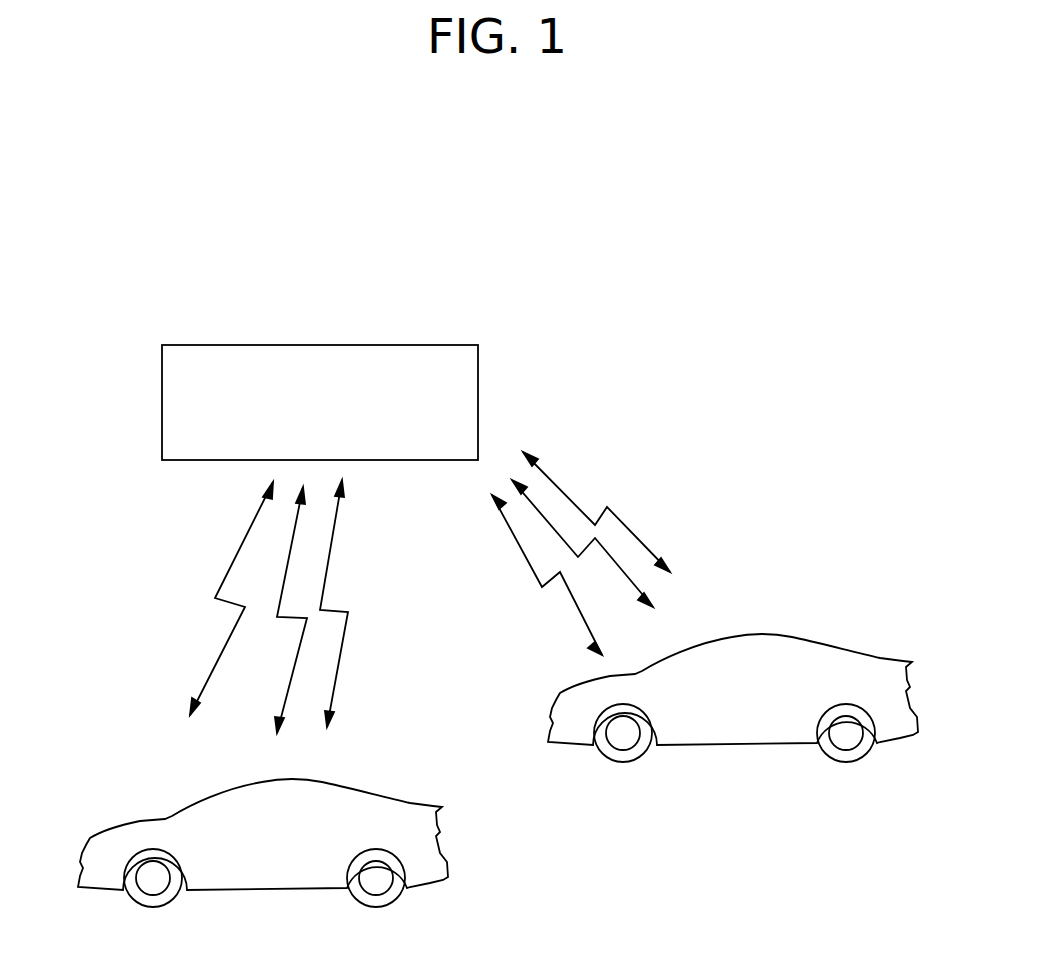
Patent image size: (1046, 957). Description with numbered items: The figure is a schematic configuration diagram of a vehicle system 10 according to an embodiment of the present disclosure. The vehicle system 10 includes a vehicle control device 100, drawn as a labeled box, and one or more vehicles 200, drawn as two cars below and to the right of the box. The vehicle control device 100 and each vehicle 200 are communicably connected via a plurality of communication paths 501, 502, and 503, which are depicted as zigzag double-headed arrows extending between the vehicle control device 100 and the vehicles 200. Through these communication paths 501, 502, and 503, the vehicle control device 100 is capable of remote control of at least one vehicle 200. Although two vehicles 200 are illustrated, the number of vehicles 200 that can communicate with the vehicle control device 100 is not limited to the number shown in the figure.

The vehicle system 10 is at (799, 181).
The vehicle control device 100 is at (478, 402).
The vehicle 200 is at (353, 787).
The communication path 501 is at (232, 568).
The communication path 502 is at (283, 587).
The communication path 503 is at (345, 633).